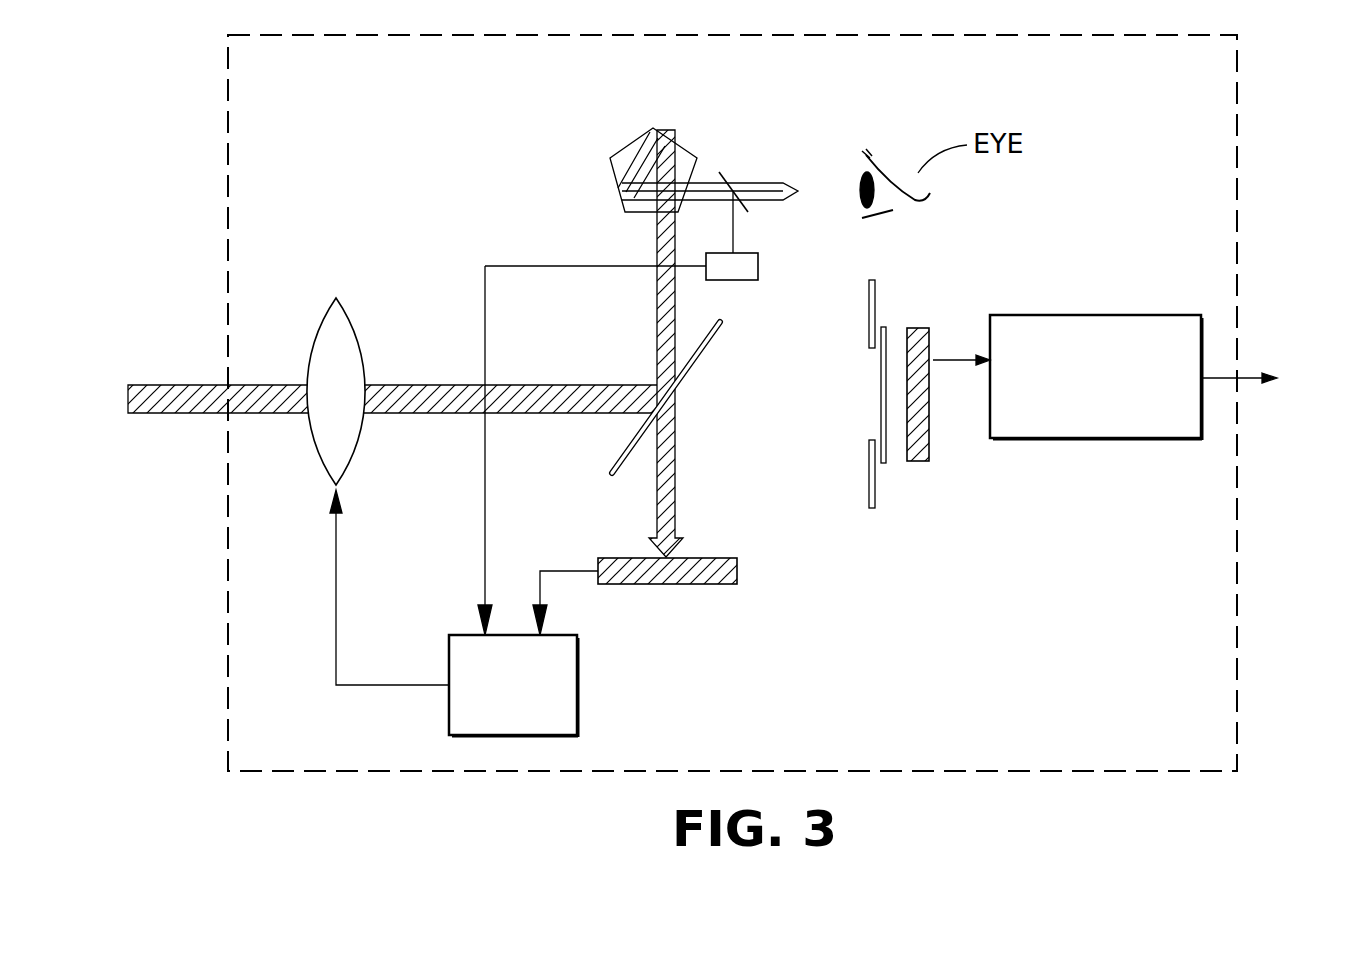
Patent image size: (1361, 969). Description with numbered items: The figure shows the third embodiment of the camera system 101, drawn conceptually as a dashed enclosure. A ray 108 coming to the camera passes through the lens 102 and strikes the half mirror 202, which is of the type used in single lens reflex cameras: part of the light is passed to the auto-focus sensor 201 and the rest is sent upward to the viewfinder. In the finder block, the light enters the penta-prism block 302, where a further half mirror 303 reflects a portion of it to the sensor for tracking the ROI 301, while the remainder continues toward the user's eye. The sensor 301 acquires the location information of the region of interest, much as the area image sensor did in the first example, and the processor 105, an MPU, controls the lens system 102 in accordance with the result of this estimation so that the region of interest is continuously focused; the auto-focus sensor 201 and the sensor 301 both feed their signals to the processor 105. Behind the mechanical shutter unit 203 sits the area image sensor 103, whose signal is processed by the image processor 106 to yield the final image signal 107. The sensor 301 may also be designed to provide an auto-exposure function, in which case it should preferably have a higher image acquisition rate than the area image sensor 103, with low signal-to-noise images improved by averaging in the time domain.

The camera system 101 is at (1000, 771).
The lens 102 is at (345, 306).
The area image sensor 103 is at (924, 327).
The processor (MPU) 105 is at (568, 635).
The image processor 106 is at (1112, 315).
The final image signal 107 is at (1267, 378).
The ray coming to the camera system 108 is at (177, 385).
The auto-focus sensor 201 is at (702, 558).
The half mirror 202 is at (712, 338).
The mechanical shutter unit 203 is at (887, 448).
The sensor for tracking ROI 301 is at (758, 266).
The penta-prism block 302 is at (632, 150).
The half mirror of penta-prism block 303 is at (732, 172).